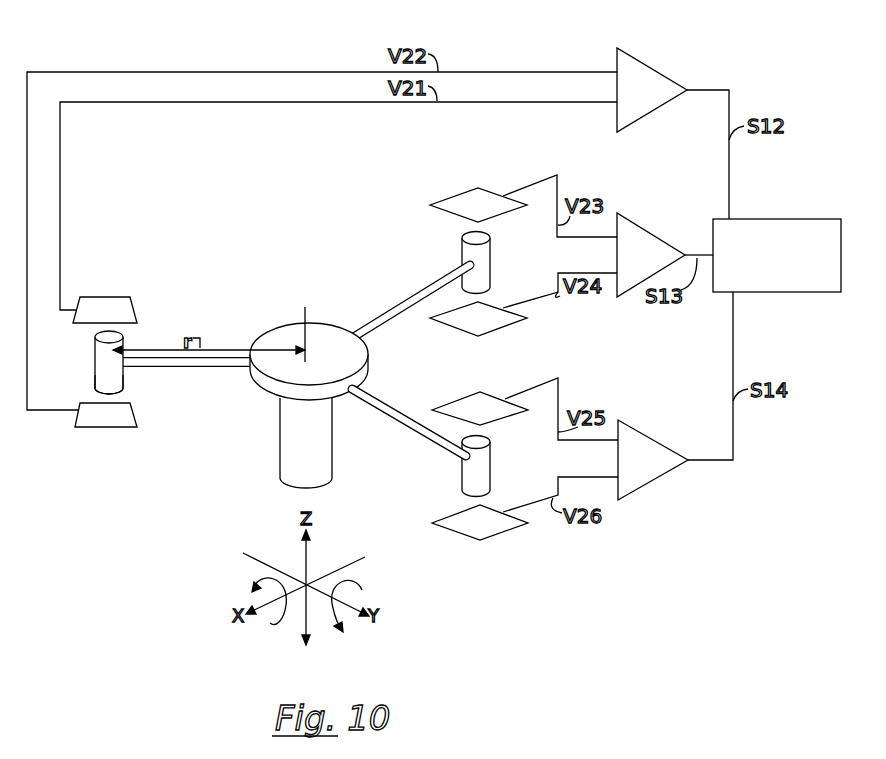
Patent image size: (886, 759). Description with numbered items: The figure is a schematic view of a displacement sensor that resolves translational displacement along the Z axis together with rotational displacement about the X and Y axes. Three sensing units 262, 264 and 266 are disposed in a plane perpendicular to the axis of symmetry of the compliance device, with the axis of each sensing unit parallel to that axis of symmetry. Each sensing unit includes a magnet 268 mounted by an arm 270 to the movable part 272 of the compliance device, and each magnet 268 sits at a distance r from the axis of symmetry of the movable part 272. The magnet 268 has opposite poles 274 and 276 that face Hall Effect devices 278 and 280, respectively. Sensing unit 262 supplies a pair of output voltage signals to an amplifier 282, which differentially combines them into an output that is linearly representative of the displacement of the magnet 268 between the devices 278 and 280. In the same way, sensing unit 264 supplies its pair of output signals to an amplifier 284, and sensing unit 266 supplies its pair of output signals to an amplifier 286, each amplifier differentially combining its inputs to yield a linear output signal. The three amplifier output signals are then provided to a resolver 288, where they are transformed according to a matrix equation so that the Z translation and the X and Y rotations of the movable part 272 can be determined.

The sensing unit 262 is at (147, 355).
The sensing unit 264 is at (418, 214).
The sensing unit 266 is at (437, 491).
The magnet 268 is at (111, 363).
The arm 270 is at (220, 371).
The movable part 272 is at (280, 452).
The pole 274 is at (95, 387).
The pole 276 is at (97, 340).
The Hall Effect device 278 is at (137, 415).
The Hall Effect device 280 is at (137, 306).
The amplifier 282 is at (637, 57).
The amplifier 284 is at (646, 231).
The amplifier 286 is at (647, 436).
The resolver 288 is at (790, 219).